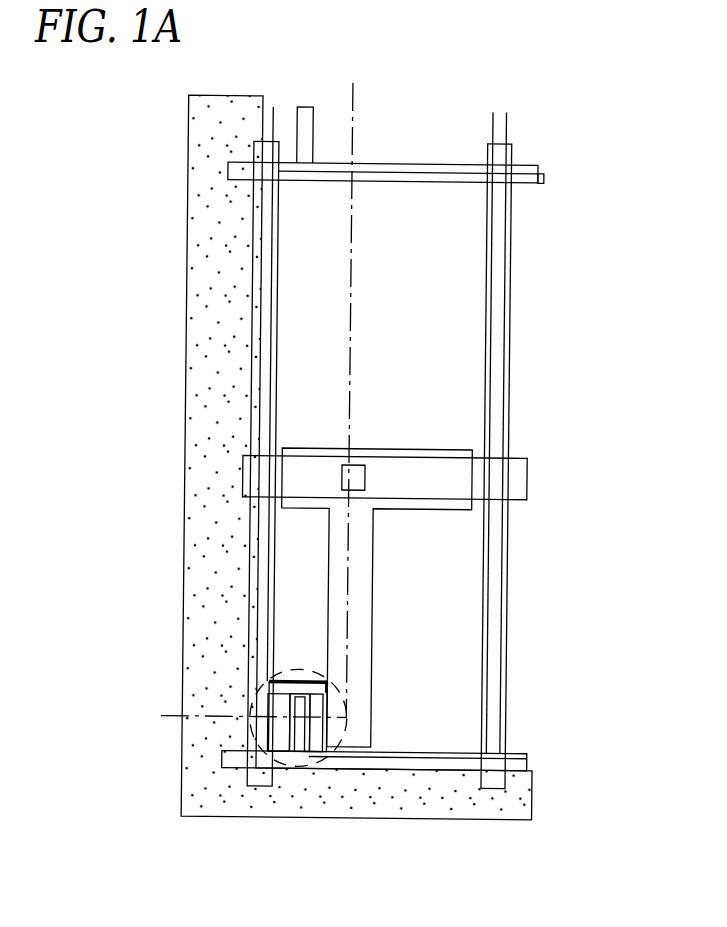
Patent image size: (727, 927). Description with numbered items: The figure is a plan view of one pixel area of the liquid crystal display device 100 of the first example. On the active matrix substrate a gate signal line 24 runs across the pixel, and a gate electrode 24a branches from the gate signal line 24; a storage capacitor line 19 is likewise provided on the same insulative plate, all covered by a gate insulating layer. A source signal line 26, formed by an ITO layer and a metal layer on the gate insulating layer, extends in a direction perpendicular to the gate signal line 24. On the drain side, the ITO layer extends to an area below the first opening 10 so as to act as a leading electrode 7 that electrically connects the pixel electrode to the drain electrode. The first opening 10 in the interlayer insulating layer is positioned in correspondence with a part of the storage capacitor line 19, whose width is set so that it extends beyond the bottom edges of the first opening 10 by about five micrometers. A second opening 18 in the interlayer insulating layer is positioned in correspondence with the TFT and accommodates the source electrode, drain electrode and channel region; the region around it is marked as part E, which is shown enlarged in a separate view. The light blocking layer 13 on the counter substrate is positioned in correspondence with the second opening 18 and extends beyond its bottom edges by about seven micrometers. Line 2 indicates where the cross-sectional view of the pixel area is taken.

The liquid crystal display device 100 is at (642, 118).
The light blocking layer 13 is at (198, 208).
The gate signal line 24 is at (517, 762).
The gate electrode 24a is at (307, 132).
The source signal line 26 is at (493, 762).
The leading electrode 7 is at (362, 634).
The storage capacitor line 19 is at (519, 480).
The first opening 10 is at (362, 470).
The second opening 18 is at (317, 710).
The part E is at (266, 754).
The line 2— 2 is at (251, 389).